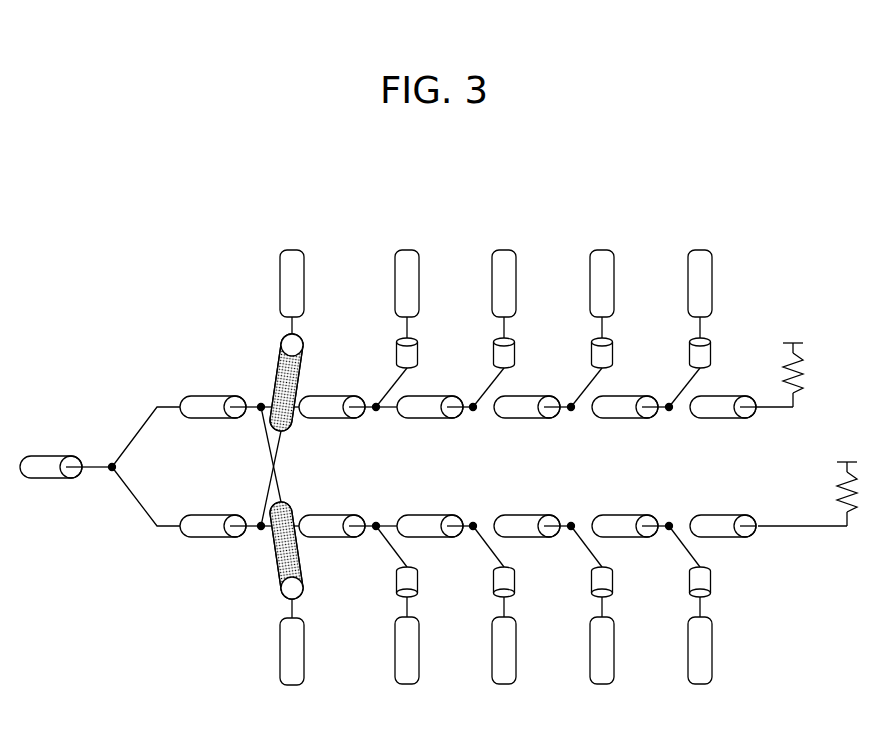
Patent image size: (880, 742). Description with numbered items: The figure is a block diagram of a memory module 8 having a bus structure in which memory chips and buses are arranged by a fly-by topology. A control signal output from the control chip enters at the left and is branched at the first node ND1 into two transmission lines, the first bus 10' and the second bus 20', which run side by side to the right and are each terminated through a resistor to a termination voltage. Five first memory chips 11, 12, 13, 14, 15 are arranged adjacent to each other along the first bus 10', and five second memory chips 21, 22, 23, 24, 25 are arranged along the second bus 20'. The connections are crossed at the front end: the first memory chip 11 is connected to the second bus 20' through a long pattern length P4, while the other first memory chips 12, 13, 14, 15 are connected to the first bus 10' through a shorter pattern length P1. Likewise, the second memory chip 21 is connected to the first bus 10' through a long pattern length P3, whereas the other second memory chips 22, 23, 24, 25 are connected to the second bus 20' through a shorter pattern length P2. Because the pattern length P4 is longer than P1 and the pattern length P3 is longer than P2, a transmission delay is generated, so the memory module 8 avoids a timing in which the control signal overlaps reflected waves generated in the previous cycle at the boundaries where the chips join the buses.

The memory module 8 is at (440, 429).
The first memory chip (N-th memory chip of the first memory chips) 11 is at (304, 271).
The first memory chip 12 is at (419, 271).
The first memory chip 13 is at (516, 271).
The first memory chip 14 is at (614, 271).
The first memory chip 15 is at (712, 271).
The second memory chip (N-th memory chip of the second memory chips) 21 is at (304, 660).
The second memory chip 22 is at (419, 660).
The second memory chip 23 is at (516, 660).
The second memory chip 24 is at (614, 660).
The second memory chip 25 is at (712, 660).
The first bus 10' is at (786, 375).
The second bus 20' is at (809, 494).
The pattern length P1 is at (418, 353).
The pattern length P2 is at (418, 580).
The pattern length P3 is at (302, 574).
The pattern length P4 is at (302, 362).
The first node ND1 is at (137, 466).